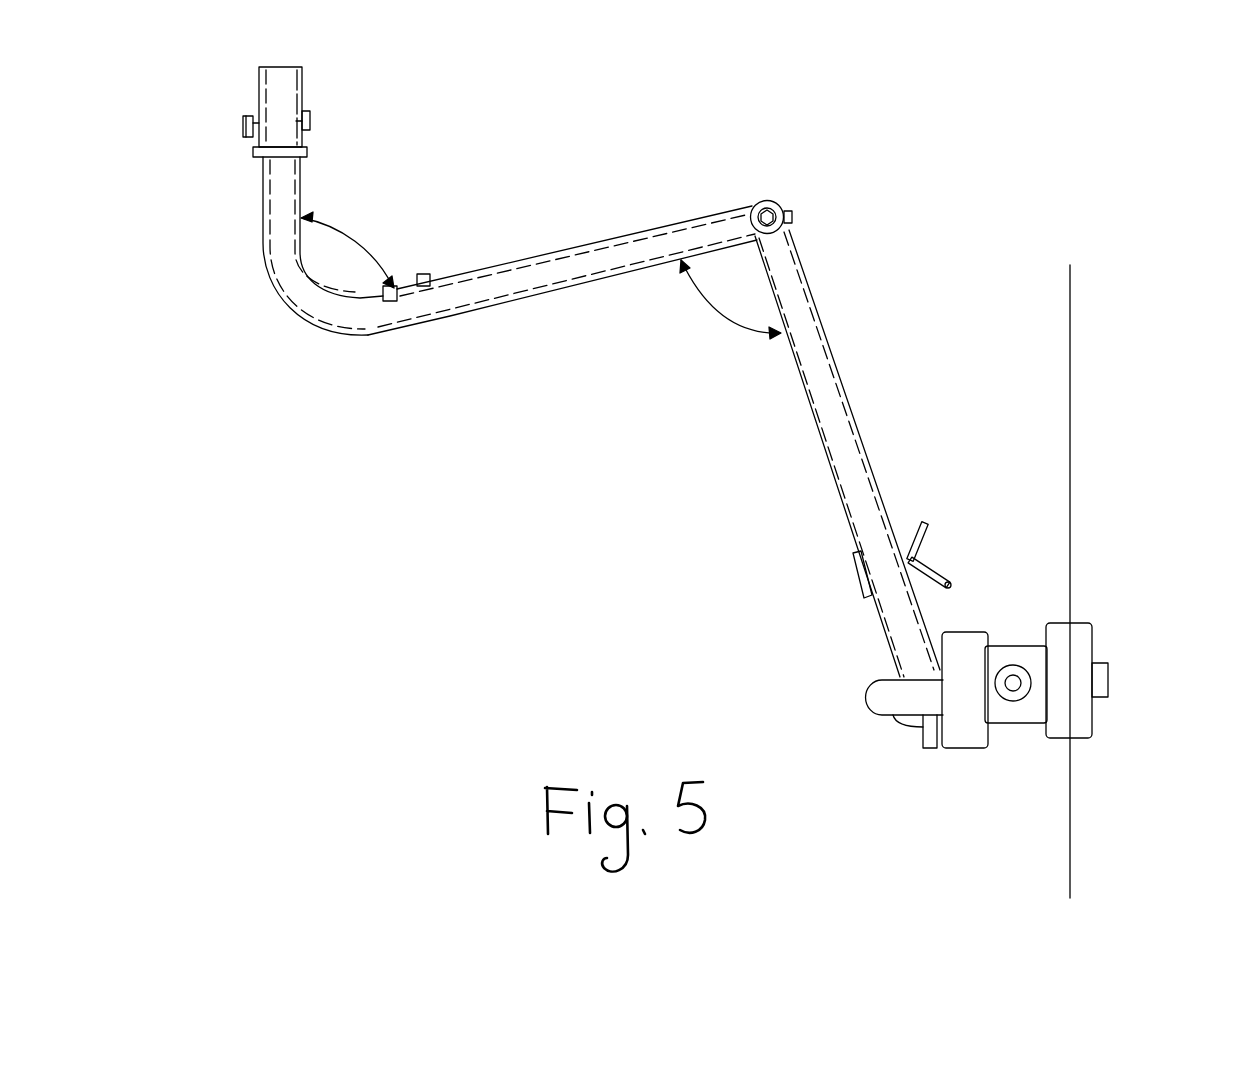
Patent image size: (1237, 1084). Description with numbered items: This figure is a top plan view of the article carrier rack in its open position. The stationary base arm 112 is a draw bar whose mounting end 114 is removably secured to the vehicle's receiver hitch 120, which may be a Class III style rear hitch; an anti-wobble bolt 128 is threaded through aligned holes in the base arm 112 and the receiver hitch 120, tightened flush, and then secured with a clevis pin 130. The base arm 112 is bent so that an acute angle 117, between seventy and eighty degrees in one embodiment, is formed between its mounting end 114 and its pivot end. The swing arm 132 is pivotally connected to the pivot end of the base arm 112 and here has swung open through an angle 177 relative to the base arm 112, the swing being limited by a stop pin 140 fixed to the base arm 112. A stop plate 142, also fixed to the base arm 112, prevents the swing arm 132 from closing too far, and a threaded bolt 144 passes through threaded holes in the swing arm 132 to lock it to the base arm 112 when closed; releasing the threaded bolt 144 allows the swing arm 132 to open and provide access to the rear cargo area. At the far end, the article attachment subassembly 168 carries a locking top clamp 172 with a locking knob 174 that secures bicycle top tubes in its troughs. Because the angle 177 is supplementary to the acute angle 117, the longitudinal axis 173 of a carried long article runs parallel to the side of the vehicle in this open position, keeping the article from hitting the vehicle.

The base arm 112 is at (528, 332).
The mounting end 114 is at (328, 199).
The acute angle 117 is at (392, 287).
The receiver hitch 120 is at (345, 93).
The anti-wobble bolt 128 is at (352, 141).
The clevis pin 130 is at (241, 130).
The swing arm 132 is at (897, 427).
The stop pin 140 is at (845, 210).
The stop plate 142 is at (408, 283).
The threaded bolt 144 is at (962, 518).
The article attachment subassembly 168 is at (1081, 604).
The locking top clamp 172 is at (1135, 742).
The longitudinal axis 173 is at (1142, 272).
The locking knob 174 is at (1008, 782).
The angle 177 is at (703, 312).